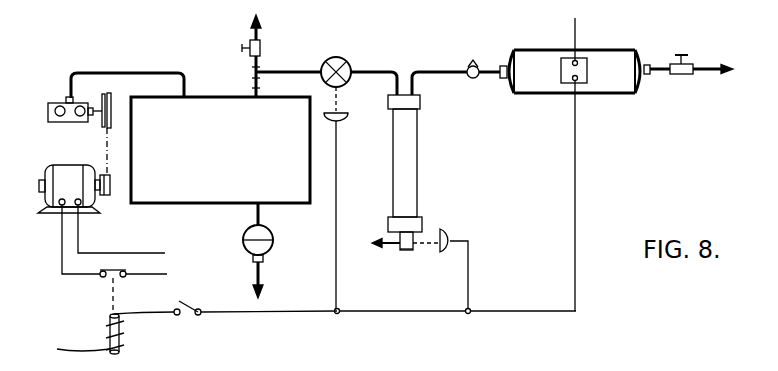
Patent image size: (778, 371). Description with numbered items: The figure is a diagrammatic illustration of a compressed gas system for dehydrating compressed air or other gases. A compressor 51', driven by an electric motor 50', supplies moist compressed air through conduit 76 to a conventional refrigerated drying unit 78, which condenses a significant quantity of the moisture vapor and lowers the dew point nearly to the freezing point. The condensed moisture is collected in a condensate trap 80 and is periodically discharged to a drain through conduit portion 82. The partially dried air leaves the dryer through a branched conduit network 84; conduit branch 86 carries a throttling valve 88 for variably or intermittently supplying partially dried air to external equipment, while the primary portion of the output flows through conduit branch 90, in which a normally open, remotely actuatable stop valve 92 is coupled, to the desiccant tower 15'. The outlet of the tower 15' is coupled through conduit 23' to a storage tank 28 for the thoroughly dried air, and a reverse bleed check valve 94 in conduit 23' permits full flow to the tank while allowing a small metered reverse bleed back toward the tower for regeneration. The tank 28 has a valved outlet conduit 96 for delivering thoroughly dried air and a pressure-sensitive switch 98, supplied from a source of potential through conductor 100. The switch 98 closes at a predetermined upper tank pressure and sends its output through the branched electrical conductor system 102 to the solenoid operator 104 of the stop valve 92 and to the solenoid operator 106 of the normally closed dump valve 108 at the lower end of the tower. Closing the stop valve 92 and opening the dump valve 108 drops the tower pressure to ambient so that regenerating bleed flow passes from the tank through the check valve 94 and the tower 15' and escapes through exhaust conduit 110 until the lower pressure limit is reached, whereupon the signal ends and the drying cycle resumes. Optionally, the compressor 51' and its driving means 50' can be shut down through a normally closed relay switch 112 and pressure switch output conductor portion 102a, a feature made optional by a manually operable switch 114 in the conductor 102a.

The desiccant tower 15' is at (395, 172).
The conduit 23' is at (439, 91).
The storage tank 28 is at (563, 50).
The electric motor 50' is at (59, 191).
The compressor 51' is at (74, 124).
The conduit 76 is at (100, 72).
The refrigerated drying unit 78 is at (306, 147).
The condensate trap 80 is at (271, 229).
The conduit portion 82 is at (255, 278).
The branched conduit network 84 is at (256, 89).
The conduit branch 86 is at (260, 28).
The throttling valve 88 is at (250, 40).
The conduit branch 90 is at (295, 70).
The stop valve 92 is at (338, 57).
The reverse bleed check valve 94 is at (475, 79).
The valved outlet conduit 96 is at (662, 64).
The pressure-sensitive switch 98 is at (570, 84).
The conductor 100 is at (577, 27).
The branched electrical conductor system 102 is at (342, 292).
The pressure switch output conductor portion 102a is at (277, 312).
The solenoid operator 104 is at (341, 111).
The solenoid operator 106 is at (447, 233).
The dump valve 108 is at (403, 251).
The exhaust conduit 110 is at (382, 240).
The relay switch 112 is at (116, 297).
The manually operable switch 114 is at (197, 289).